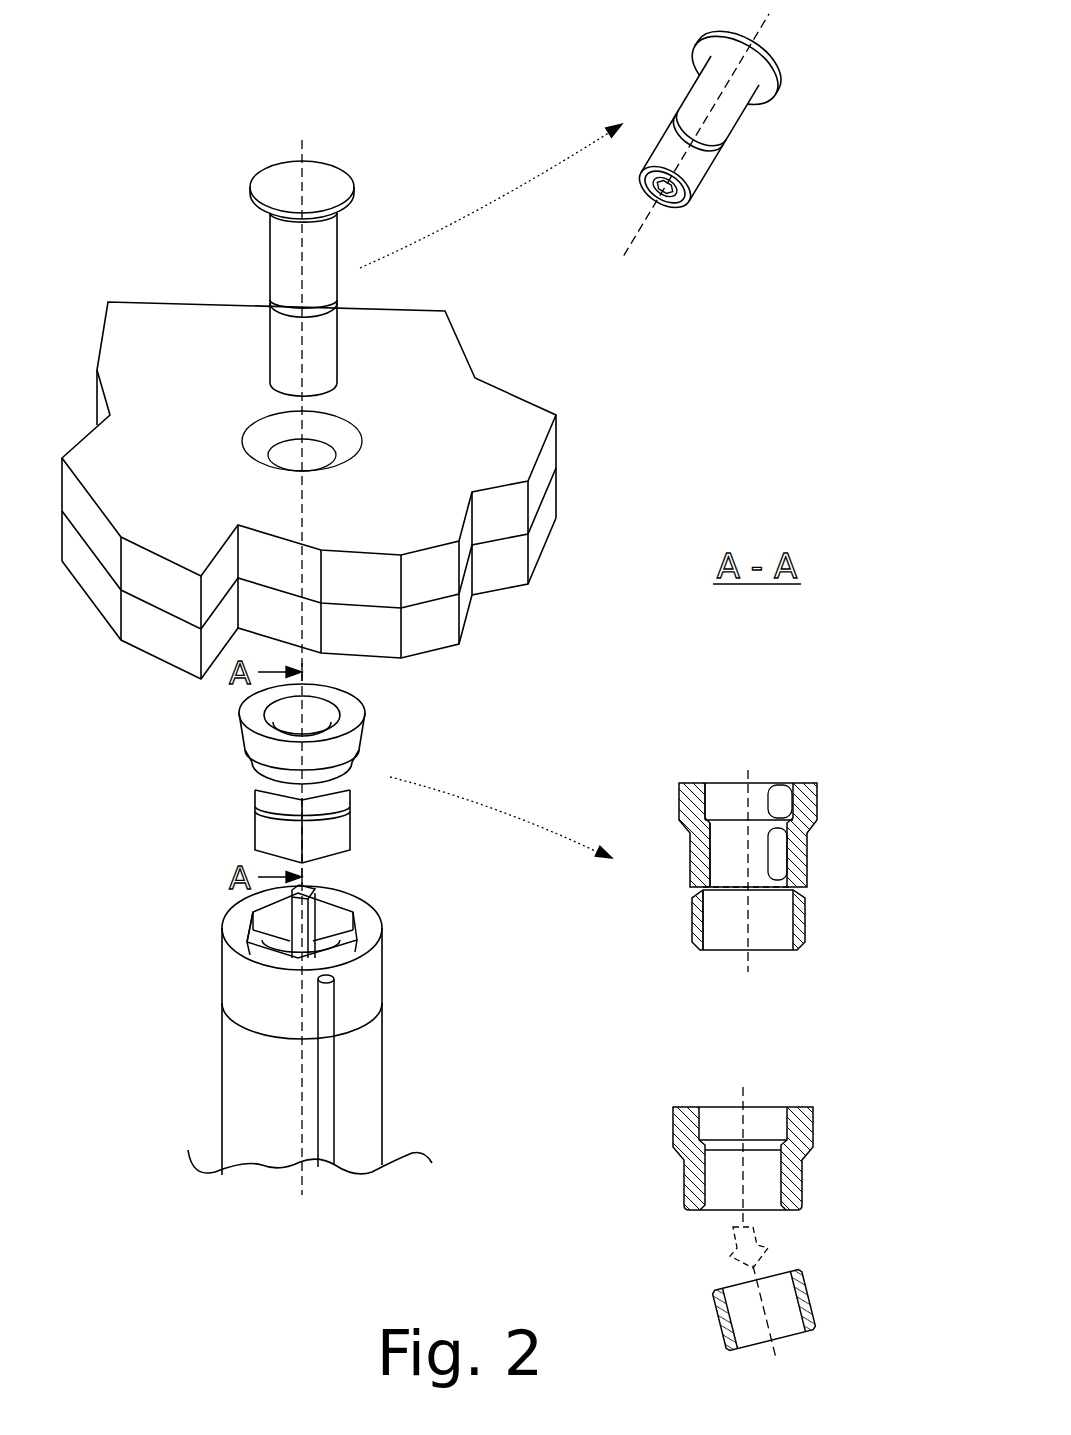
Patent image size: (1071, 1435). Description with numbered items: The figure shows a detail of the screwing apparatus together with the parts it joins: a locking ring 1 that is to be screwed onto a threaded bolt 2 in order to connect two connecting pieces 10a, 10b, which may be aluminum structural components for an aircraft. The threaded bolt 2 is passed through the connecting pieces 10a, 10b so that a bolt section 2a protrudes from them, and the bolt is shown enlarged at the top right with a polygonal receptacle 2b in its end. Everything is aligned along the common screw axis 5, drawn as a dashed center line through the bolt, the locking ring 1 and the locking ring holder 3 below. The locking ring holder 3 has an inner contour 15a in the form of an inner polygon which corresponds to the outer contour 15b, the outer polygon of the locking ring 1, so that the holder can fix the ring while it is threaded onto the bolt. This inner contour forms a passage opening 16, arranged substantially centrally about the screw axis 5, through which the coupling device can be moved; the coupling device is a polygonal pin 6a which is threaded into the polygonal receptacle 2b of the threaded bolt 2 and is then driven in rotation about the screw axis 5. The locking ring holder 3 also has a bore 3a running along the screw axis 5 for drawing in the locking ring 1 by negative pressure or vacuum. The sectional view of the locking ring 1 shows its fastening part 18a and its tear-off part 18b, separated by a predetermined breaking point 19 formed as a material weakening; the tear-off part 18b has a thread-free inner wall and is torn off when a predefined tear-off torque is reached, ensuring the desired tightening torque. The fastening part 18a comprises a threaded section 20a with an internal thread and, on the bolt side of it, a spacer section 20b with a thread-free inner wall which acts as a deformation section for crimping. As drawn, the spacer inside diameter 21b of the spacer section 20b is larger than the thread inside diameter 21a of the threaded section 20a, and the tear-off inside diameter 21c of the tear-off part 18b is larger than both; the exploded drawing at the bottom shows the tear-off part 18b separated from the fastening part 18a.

The locking ring 1 is at (511, 1000).
The threaded bolt 2 is at (488, 198).
The bolt section 2a is at (465, 226).
The polygonal receptacle 2b is at (672, 216).
The locking ring holder 3 is at (287, 1030).
The bore 3a is at (328, 1082).
The screw axis 5 is at (303, 150).
The polygonal pin 6a is at (320, 888).
The connecting piece 10a is at (503, 417).
The connecting piece 10b is at (542, 537).
The inner contour 15a is at (358, 919).
The outer contour 15b is at (273, 836).
The passage opening 16 is at (248, 926).
The fastening part 18a is at (818, 808).
The tear-off part 18b is at (805, 927).
The predetermined breaking point 19 is at (800, 890).
The threaded section 20a is at (767, 855).
The spacer section 20b is at (775, 803).
The thread inside diameter 21a is at (712, 780).
The spacer inside diameter 21b is at (705, 690).
The tear-off inside diameter 21c is at (792, 975).